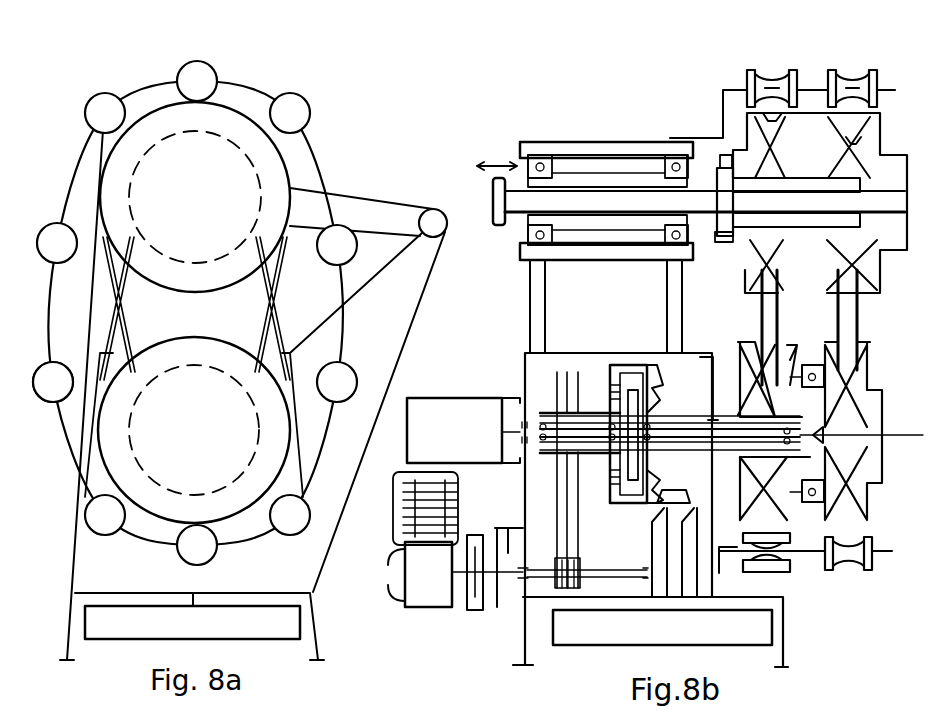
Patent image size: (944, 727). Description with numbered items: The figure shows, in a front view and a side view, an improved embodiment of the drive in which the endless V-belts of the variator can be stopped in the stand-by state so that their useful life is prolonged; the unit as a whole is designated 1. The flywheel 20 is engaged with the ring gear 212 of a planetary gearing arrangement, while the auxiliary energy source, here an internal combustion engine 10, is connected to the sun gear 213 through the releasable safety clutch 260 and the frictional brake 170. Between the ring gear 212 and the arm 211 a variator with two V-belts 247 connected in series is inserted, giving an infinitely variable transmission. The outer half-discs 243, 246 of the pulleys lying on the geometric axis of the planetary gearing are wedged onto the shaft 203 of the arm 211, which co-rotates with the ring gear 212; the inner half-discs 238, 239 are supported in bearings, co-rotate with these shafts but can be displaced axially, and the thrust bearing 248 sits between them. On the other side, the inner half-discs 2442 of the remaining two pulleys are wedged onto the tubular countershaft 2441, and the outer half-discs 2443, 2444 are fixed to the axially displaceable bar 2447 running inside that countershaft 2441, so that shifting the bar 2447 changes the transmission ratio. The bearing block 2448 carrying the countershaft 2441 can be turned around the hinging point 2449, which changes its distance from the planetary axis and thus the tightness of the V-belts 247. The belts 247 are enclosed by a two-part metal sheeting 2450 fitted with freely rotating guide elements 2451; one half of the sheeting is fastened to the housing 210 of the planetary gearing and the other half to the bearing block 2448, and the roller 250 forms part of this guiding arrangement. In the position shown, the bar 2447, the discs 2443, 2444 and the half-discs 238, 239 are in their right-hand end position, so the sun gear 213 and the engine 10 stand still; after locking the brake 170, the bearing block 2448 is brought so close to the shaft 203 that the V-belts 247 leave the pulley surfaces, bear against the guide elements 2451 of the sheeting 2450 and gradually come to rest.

In FIG. 8b, the generator unit 1 is at (450, 425).
In FIG. 8b, the internal combustion engine 10 is at (413, 570).
In FIG. 8b, the flywheel 20 is at (568, 633).
In FIG. 8b, the frictional brake 170 is at (498, 603).
In FIG. 8b, the shaft 203 is at (692, 422).
In FIG. 8b, the housing 210 is at (715, 586).
In FIG. 8b, the arm 211 is at (637, 503).
In FIG. 8b, the ring gear 212 is at (650, 470).
In FIG. 8b, the sun gear 213 is at (610, 413).
In FIG. 8b, the inner half-disc 238 is at (840, 353).
In FIG. 8b, the inner half-disc 239 is at (790, 360).
In FIG. 8b, the outer half-disc 243 is at (738, 352).
In FIG. 8b, the outer half-disc 246 is at (867, 477).
In FIG. 8a, the V-belts 247 is at (118, 312).
In FIG. 8b, the V-belts 247 is at (770, 310).
In FIG. 8b, the thrust bearing 248 is at (825, 377).
In FIG. 8a, the roller 250 is at (55, 404).
In FIG. 8b, the releasable safety clutch 260 is at (472, 602).
In FIG. 8b, the tubular countershaft 2441 is at (577, 178).
In FIG. 8b, the inner half-discs 2442 is at (793, 270).
In FIG. 8b, the outer half-disc 2443 is at (887, 118).
In FIG. 8b, the outer half-disc 2444 is at (723, 105).
In FIG. 8b, the axially displaceable bar 2447 is at (647, 200).
In FIG. 8b, the bearing block 2448 is at (533, 147).
In FIG. 8a, the hinging point 2449 is at (433, 208).
In FIG. 8a, the metal sheeting 2450 is at (80, 172).
In FIG. 8a, the guide elements 2451 is at (197, 63).
In FIG. 8b, the guide elements 2451 is at (833, 82).